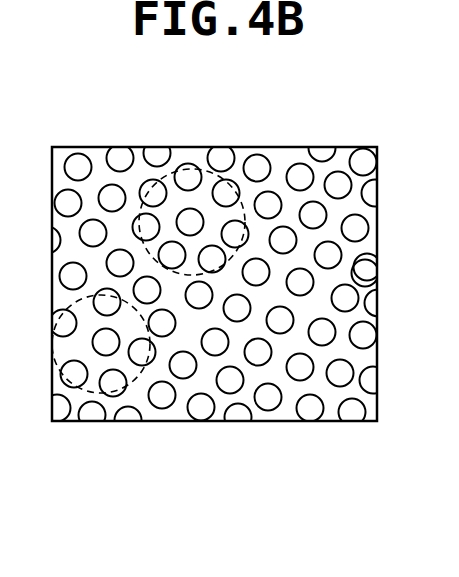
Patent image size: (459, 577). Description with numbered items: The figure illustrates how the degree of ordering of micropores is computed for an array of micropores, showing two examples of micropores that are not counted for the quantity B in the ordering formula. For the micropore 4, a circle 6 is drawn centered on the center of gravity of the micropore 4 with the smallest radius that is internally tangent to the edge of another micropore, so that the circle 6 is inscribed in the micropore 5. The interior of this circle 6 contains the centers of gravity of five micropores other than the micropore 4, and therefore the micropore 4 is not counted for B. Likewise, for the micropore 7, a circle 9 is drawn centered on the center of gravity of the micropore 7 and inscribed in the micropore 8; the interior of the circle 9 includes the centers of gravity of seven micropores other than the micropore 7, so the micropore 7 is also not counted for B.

The micropore 4 is at (104, 356).
The micropore 5 is at (139, 366).
The circle 6 is at (83, 392).
The micropore 7 is at (191, 208).
The micropore 8 is at (173, 240).
The circle 9 is at (220, 177).